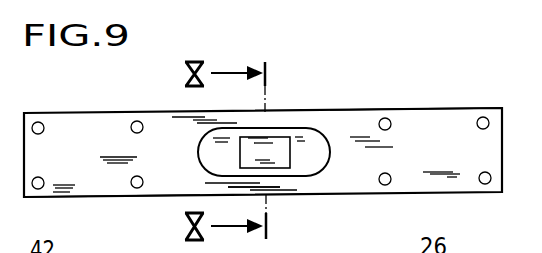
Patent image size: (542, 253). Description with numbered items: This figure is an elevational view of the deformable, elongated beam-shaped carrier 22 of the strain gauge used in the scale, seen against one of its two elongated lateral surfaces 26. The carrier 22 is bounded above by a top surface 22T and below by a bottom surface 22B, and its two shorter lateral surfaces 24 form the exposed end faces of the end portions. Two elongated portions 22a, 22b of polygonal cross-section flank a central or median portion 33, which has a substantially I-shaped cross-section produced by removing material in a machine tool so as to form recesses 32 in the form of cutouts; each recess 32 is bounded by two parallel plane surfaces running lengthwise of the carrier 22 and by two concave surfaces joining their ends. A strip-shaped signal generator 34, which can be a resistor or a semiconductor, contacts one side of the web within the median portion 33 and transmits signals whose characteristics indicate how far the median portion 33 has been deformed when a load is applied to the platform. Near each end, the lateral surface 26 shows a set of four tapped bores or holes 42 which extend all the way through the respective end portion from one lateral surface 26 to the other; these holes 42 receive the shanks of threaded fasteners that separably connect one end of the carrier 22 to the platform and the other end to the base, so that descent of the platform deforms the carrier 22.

The carrier 22 is at (109, 129).
The elongated portion 22a is at (157, 172).
The bottom surface 22B is at (85, 197).
The elongated portion 22b is at (355, 118).
The top surface 22T is at (440, 107).
The shorter lateral surface 24 is at (504, 165).
The elongated lateral surface 26 is at (90, 155).
The recess 32 is at (310, 147).
The median portion 33 is at (283, 182).
The signal generator 34 is at (272, 155).
The tapped bore 42 is at (478, 127).